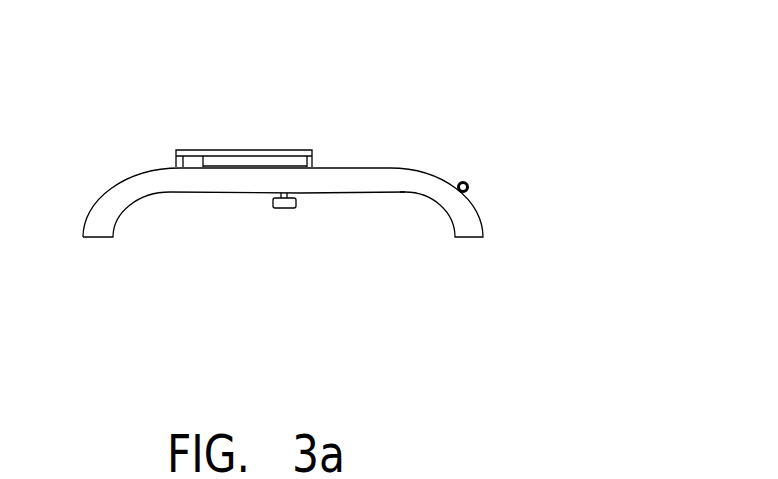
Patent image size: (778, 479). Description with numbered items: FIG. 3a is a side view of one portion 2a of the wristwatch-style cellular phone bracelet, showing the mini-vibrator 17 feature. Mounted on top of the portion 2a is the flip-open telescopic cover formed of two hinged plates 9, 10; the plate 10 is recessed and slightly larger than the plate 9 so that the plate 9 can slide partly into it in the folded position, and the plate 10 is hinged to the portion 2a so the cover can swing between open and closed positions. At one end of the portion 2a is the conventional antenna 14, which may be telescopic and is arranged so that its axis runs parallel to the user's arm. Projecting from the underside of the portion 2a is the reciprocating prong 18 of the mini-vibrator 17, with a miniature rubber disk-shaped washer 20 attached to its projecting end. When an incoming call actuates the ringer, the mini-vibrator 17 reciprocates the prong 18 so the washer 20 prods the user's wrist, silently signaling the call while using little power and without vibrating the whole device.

The portion of the bracelet 2a is at (388, 168).
The plate 9 is at (268, 162).
The plate 10 is at (233, 150).
The antenna 14 is at (469, 183).
The mini-vibrator 17 is at (235, 228).
The reciprocating prong 18 is at (300, 193).
The disk-shaped washer 20 is at (285, 208).